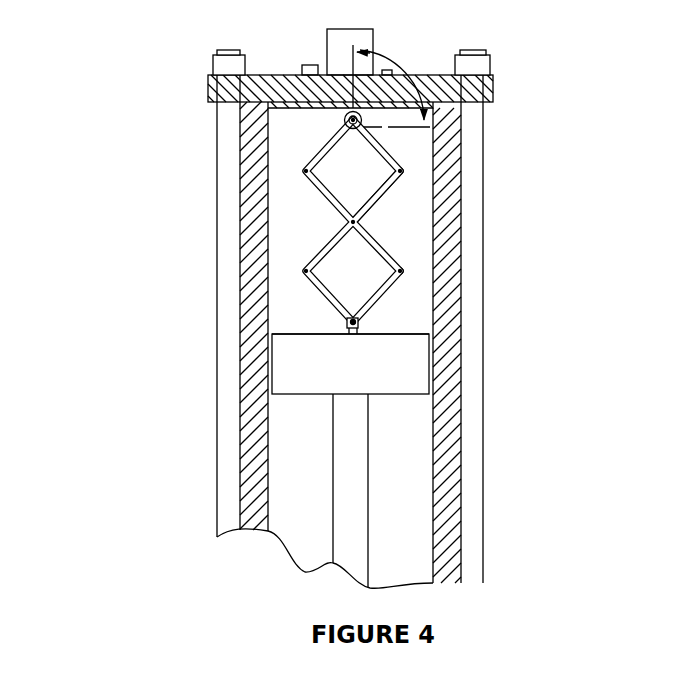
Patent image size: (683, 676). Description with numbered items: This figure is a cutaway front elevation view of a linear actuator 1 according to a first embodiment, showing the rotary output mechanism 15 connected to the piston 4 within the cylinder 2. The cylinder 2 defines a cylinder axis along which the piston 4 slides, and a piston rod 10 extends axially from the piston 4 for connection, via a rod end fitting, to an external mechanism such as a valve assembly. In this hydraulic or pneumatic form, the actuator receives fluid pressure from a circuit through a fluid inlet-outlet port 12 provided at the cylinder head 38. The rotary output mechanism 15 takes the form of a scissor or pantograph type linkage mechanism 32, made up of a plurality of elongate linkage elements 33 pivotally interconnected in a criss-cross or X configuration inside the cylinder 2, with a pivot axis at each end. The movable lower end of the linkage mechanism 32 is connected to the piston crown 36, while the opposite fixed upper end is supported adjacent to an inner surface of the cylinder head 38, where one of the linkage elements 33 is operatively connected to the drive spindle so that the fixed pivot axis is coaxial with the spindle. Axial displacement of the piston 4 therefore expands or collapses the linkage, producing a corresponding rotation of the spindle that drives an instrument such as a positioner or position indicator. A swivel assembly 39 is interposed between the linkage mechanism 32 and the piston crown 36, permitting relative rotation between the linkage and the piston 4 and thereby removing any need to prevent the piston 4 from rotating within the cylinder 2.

The linear actuator 1 is at (135, 155).
The cylinder 2 is at (250, 343).
The piston 4 is at (405, 362).
The piston rod 10 is at (350, 488).
The fluid inlet-outlet port 12 is at (367, 38).
The rotary output mechanism 15 is at (318, 207).
The scissor or pantograph type linkage mechanism 32 is at (383, 219).
The elongate linkage elements 33 is at (390, 289).
The piston crown 36 is at (315, 333).
The cylinder head 38 is at (287, 86).
The swivel assembly 39 is at (357, 328).